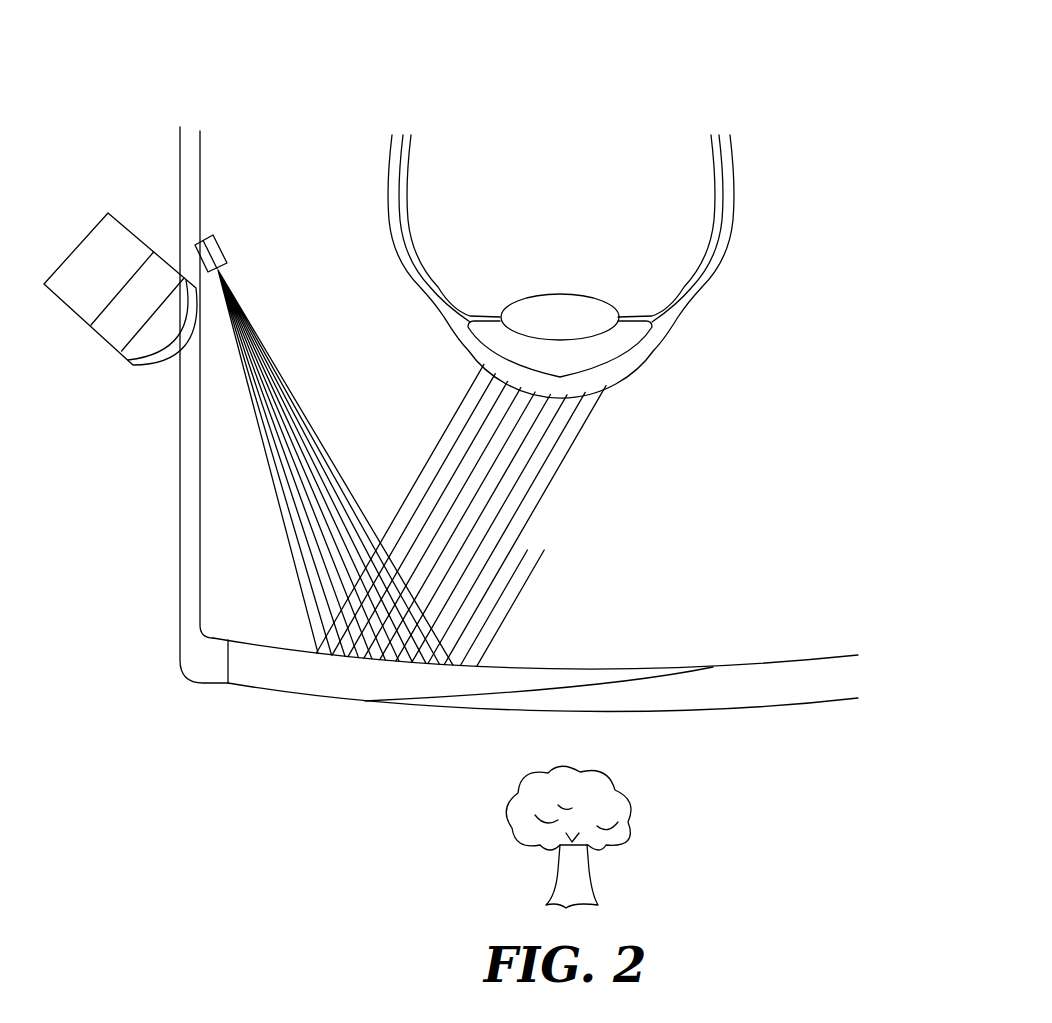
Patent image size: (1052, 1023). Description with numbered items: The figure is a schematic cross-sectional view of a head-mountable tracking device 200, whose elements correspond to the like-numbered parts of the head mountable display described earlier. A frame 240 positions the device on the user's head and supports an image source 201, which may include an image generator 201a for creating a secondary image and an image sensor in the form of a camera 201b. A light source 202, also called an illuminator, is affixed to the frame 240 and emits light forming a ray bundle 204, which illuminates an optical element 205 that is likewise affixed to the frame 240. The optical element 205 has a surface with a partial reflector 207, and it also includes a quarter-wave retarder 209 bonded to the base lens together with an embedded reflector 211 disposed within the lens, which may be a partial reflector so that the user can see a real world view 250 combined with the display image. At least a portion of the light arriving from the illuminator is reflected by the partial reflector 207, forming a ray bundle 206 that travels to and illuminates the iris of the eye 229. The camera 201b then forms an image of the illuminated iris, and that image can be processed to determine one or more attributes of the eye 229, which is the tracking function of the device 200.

The head-mountable tracking device 200 is at (158, 48).
The image source 201 is at (104, 293).
The image generator 201a is at (68, 292).
The camera 201b is at (113, 333).
The light source 202 is at (222, 245).
The ray bundle 204 is at (298, 457).
The optical element 205 is at (543, 686).
The ray bundle 206 is at (528, 462).
The partial reflector 207 is at (818, 658).
The quarter-wave retarder 209 is at (835, 660).
The embedded reflector 211 is at (603, 687).
The eye 229 is at (349, 141).
The frame 240 is at (183, 153).
The real world view 250 is at (635, 872).